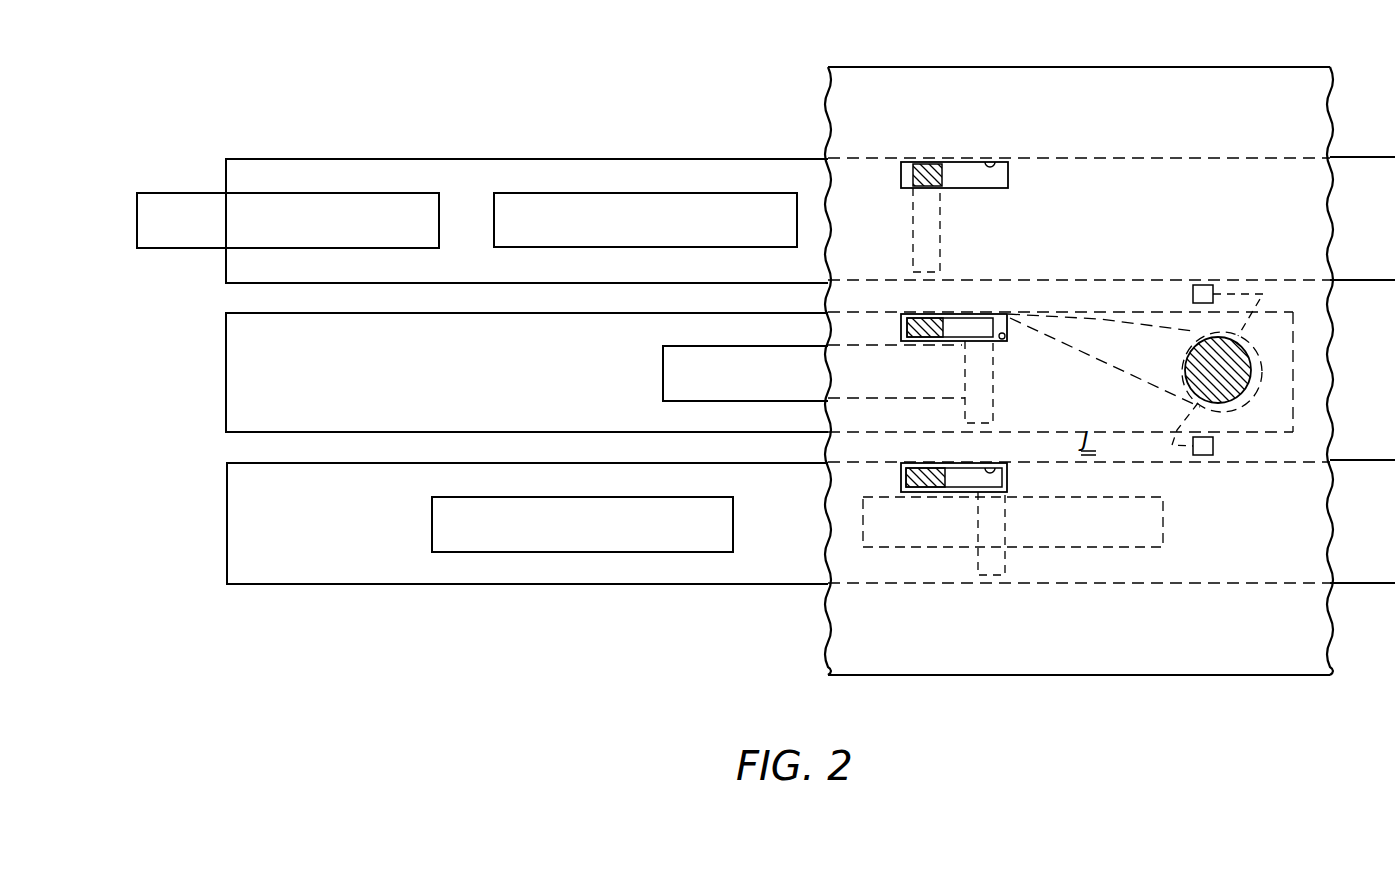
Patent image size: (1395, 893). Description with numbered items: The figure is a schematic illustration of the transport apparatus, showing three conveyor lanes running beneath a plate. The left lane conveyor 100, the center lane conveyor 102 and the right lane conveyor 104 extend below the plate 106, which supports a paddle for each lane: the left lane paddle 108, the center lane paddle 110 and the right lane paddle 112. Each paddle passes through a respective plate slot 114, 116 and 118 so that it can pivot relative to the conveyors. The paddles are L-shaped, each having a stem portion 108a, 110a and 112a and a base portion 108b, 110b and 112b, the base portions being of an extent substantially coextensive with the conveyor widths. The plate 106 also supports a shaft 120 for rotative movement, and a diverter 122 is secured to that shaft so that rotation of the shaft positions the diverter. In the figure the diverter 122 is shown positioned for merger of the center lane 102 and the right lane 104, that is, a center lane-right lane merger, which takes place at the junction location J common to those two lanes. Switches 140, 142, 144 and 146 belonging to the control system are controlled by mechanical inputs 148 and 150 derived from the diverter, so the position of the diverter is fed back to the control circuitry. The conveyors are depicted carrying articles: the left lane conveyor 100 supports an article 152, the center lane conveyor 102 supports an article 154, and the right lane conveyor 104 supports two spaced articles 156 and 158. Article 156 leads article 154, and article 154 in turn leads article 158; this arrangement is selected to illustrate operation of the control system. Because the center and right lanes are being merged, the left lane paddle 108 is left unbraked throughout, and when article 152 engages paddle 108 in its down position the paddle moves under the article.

The conveyor 100 is at (530, 170).
The conveyor 102 is at (238, 349).
The conveyor 104 is at (348, 570).
The plate 106 is at (900, 77).
The paddle 108 is at (953, 191).
The stem portion 108a is at (930, 168).
The base portion 108b is at (932, 228).
The paddle 110 is at (945, 353).
The stem portion 110a is at (914, 331).
The base portion 110b is at (975, 377).
The paddle 112 is at (947, 504).
The stem portion 112a is at (912, 481).
The base portion 112b is at (995, 525).
The plate slot 114 is at (993, 166).
The plate slot 116 is at (1004, 340).
The plate slot 118 is at (992, 472).
The shaft 120 is at (1233, 384).
The diverter 122 is at (1112, 348).
The switch 140 is at (1201, 271).
The switch 142 is at (1241, 468).
The switch 144 is at (1200, 285).
The switch 146 is at (1203, 446).
The mechanical input 148 is at (1243, 300).
The mechanical input 150 is at (1180, 462).
The article 152 is at (635, 200).
The article 154 is at (672, 362).
The article 156 is at (1128, 546).
The article 158 is at (614, 537).